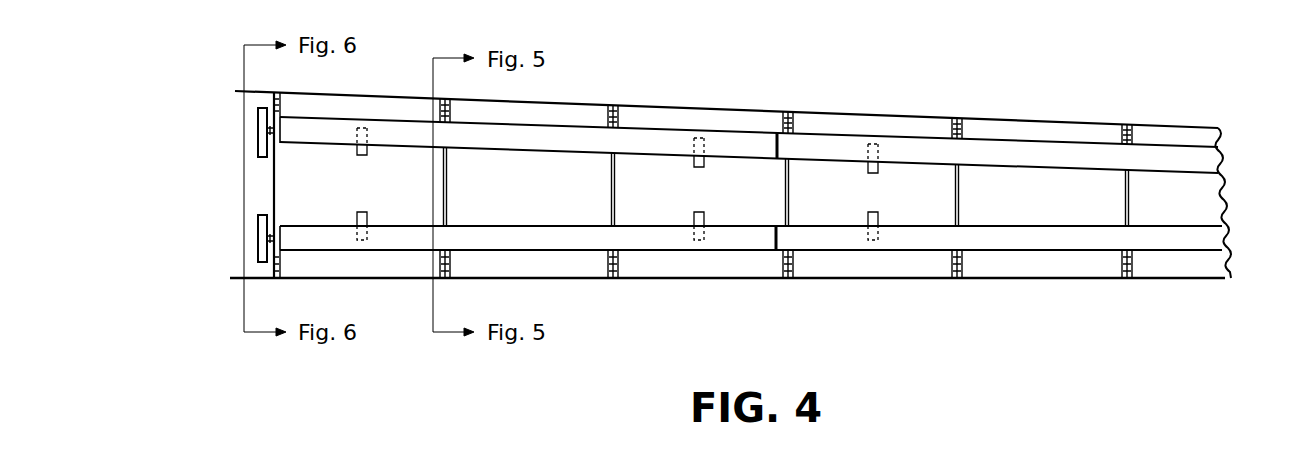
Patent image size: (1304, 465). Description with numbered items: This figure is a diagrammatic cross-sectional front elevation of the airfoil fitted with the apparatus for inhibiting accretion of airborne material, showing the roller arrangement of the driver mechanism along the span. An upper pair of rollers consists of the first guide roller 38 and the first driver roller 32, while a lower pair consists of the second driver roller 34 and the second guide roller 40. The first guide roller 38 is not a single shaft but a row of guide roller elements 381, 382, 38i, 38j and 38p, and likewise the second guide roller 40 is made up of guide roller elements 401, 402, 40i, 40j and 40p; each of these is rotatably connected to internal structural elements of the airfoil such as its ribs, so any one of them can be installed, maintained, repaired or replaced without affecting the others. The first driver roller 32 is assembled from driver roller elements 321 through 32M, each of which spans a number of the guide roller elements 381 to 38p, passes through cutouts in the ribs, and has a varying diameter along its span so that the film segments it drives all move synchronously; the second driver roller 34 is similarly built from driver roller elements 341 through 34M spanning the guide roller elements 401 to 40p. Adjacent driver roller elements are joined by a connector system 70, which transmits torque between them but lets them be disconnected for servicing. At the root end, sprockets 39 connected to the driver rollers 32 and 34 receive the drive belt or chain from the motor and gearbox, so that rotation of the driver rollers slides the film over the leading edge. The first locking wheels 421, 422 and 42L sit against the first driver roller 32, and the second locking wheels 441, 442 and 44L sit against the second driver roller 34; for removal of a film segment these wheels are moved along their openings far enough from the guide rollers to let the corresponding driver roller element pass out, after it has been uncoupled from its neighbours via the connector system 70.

The first driver roller 32 is at (1238, 152).
The driver roller element 321 is at (568, 140).
The driver roller element 32M is at (1031, 155).
The second driver roller 34 is at (1238, 226).
The driver roller element 341 is at (565, 238).
The driver roller element 34M is at (1027, 240).
The first guide roller 38 is at (1238, 126).
The guide roller element 381 is at (338, 103).
The guide roller element 382 is at (533, 111).
The guide roller element 38i is at (718, 121).
The guide roller element 38j is at (884, 124).
The guide roller element 38p is at (1161, 132).
The sprocket 39 is at (258, 130).
The second guide roller 40 is at (1238, 252).
The guide roller element 401 is at (344, 261).
The guide roller element 402 is at (520, 262).
The guide roller element 40i is at (694, 272).
The guide roller element 40j is at (857, 272).
The guide roller element 40p is at (1178, 273).
The first locking wheel 421 is at (368, 157).
The first locking wheel 422 is at (705, 169).
The first locking wheel 42L is at (879, 175).
The second locking wheel 441 is at (357, 211).
The second locking wheel 442 is at (694, 213).
The second locking wheel 44L is at (869, 213).
The connector system 70 is at (780, 147).